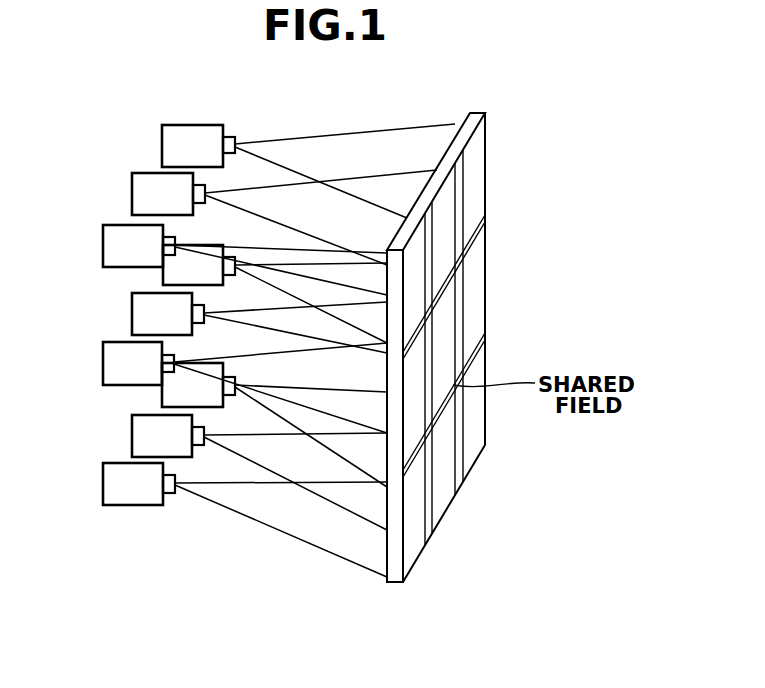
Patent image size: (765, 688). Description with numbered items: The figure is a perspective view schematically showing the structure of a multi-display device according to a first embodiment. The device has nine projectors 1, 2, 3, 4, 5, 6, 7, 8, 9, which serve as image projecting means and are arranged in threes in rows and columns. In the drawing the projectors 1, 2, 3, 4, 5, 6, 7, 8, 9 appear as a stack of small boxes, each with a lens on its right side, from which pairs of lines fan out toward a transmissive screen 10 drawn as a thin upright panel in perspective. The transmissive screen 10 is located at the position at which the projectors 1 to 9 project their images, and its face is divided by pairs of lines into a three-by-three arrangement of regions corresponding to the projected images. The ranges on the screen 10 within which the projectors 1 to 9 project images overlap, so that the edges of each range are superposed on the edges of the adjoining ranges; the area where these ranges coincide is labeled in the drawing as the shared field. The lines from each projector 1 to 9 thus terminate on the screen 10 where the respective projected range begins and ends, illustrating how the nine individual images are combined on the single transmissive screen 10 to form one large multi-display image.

The projector 1 is at (118, 241).
The projector 2 is at (148, 190).
The projector 3 is at (178, 142).
The projector 4 is at (118, 357).
The projector 5 is at (148, 310).
The projector 6 is at (178, 279).
The projector 7 is at (118, 482).
The projector 8 is at (148, 432).
The projector 9 is at (178, 398).
The transmissive screen 10 is at (473, 199).